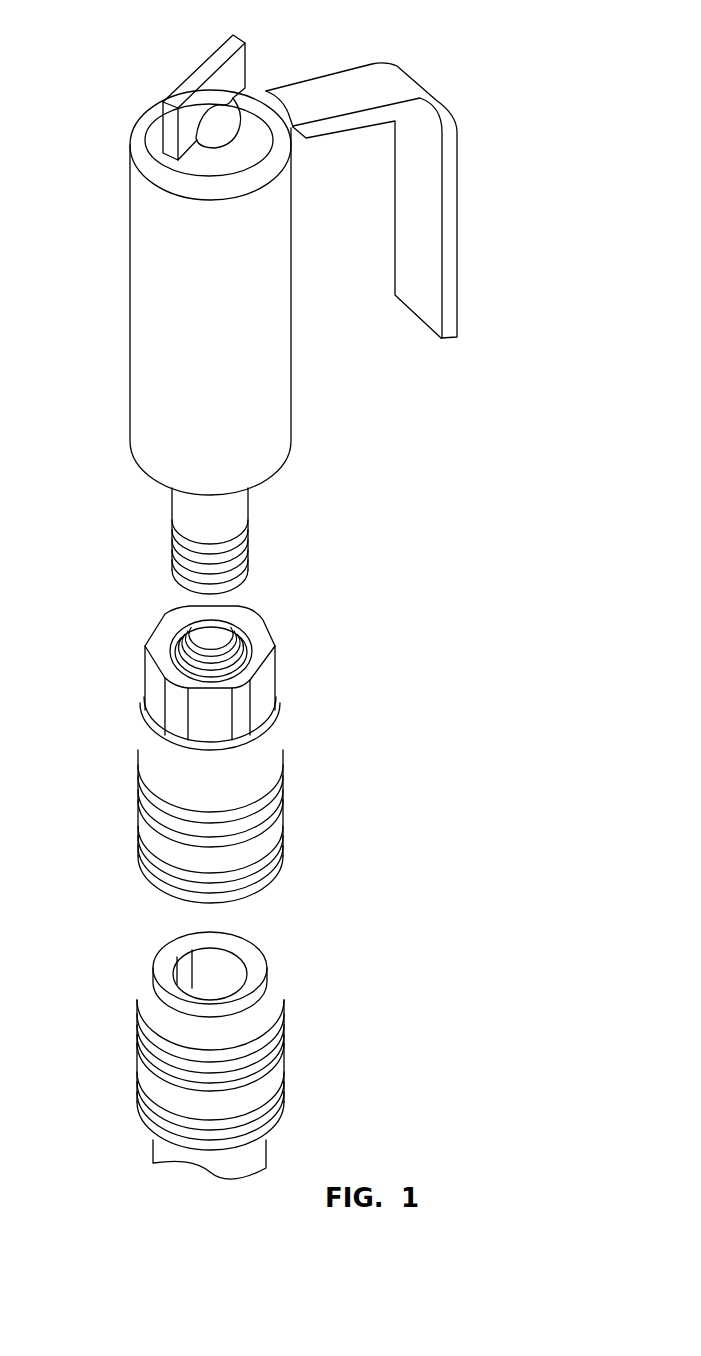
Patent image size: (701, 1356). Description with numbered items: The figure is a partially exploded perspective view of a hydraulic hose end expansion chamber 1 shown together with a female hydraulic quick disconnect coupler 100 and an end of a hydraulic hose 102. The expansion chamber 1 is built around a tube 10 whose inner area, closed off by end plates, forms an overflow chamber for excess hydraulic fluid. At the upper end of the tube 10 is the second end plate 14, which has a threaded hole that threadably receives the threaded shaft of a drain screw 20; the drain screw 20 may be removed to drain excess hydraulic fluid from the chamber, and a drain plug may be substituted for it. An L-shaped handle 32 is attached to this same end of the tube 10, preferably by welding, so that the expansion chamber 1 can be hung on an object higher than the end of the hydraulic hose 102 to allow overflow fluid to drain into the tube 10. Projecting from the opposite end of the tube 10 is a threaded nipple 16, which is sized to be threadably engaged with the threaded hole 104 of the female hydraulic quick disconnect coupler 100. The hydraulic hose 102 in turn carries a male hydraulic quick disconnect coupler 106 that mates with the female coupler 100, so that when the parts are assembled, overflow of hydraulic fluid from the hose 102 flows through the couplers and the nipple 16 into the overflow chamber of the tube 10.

The hydraulic hose end expansion chamber 1 is at (487, 138).
The tube 10 is at (131, 367).
The second end plate 14 is at (137, 128).
The drain screw 20 is at (212, 62).
The L-shaped handle 32 is at (457, 248).
The threaded nipple 16 is at (249, 506).
The female hydraulic quick disconnect coupler 100 is at (337, 737).
The threaded hole 104 is at (245, 633).
The hydraulic hose 102 is at (328, 1033).
The male hydraulic quick disconnect coupler 106 is at (262, 948).